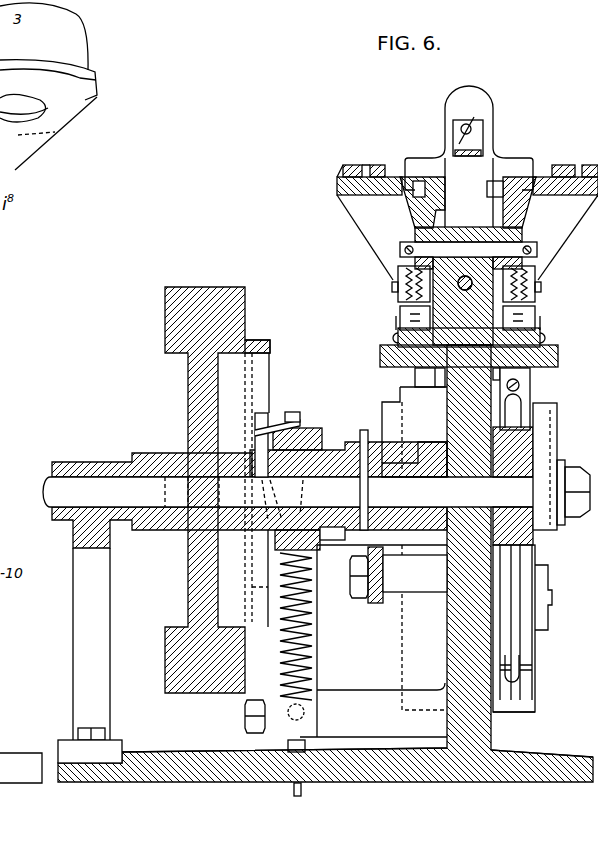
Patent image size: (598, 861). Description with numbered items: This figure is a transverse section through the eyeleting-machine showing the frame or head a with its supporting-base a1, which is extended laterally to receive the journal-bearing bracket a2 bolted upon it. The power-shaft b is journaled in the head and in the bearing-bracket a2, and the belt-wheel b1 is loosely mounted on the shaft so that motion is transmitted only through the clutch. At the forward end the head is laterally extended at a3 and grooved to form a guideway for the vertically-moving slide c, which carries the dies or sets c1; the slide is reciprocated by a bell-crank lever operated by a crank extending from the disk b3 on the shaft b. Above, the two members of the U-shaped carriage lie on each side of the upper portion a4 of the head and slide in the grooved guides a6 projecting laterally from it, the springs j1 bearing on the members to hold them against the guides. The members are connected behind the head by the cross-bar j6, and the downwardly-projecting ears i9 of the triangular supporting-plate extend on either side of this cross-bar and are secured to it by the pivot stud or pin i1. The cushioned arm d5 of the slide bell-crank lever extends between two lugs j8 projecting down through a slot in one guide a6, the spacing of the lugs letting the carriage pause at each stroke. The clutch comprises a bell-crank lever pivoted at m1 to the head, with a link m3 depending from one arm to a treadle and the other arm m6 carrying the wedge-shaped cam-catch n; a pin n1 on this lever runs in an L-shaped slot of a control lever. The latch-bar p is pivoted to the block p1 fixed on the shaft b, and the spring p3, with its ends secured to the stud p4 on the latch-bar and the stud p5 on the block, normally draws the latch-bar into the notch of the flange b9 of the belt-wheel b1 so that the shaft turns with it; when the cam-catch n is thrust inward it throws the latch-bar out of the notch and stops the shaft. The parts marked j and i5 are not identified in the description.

The frame or head a is at (447, 655).
The supporting-base a1 is at (158, 762).
The journal-bearing bracket a2 is at (78, 604).
The laterally extended forward end of head a3 is at (414, 432).
The upper portion of head a4 is at (487, 106).
The grooved guides a6 is at (380, 360).
The power-shaft b is at (68, 483).
The belt-wheel b1 is at (165, 331).
The disk b3 is at (533, 440).
The flange b9 is at (262, 340).
The vertically-moving slide c is at (515, 712).
The dies or sets c1 is at (415, 380).
The arm of bell-crank lever d5 is at (513, 592).
The pivot stud or pin i1 is at (505, 250).
The left clamp arm i5 is at (380, 215).
The downwardly-projecting ears i9 is at (400, 258).
The left nut j is at (396, 325).
The springs j1 is at (535, 324).
The cross-bar j6 is at (463, 301).
The lugs j8 is at (530, 383).
The pivot m1 is at (346, 641).
The link m3 is at (302, 792).
The arm of bell-crank lever m6 is at (318, 638).
The cam-catch n is at (272, 428).
The pin n1 is at (376, 578).
The latch-bar p is at (304, 497).
The block p1 is at (364, 436).
The spring p3 is at (291, 412).
The stud p4 is at (303, 420).
The stud p5 is at (269, 500).